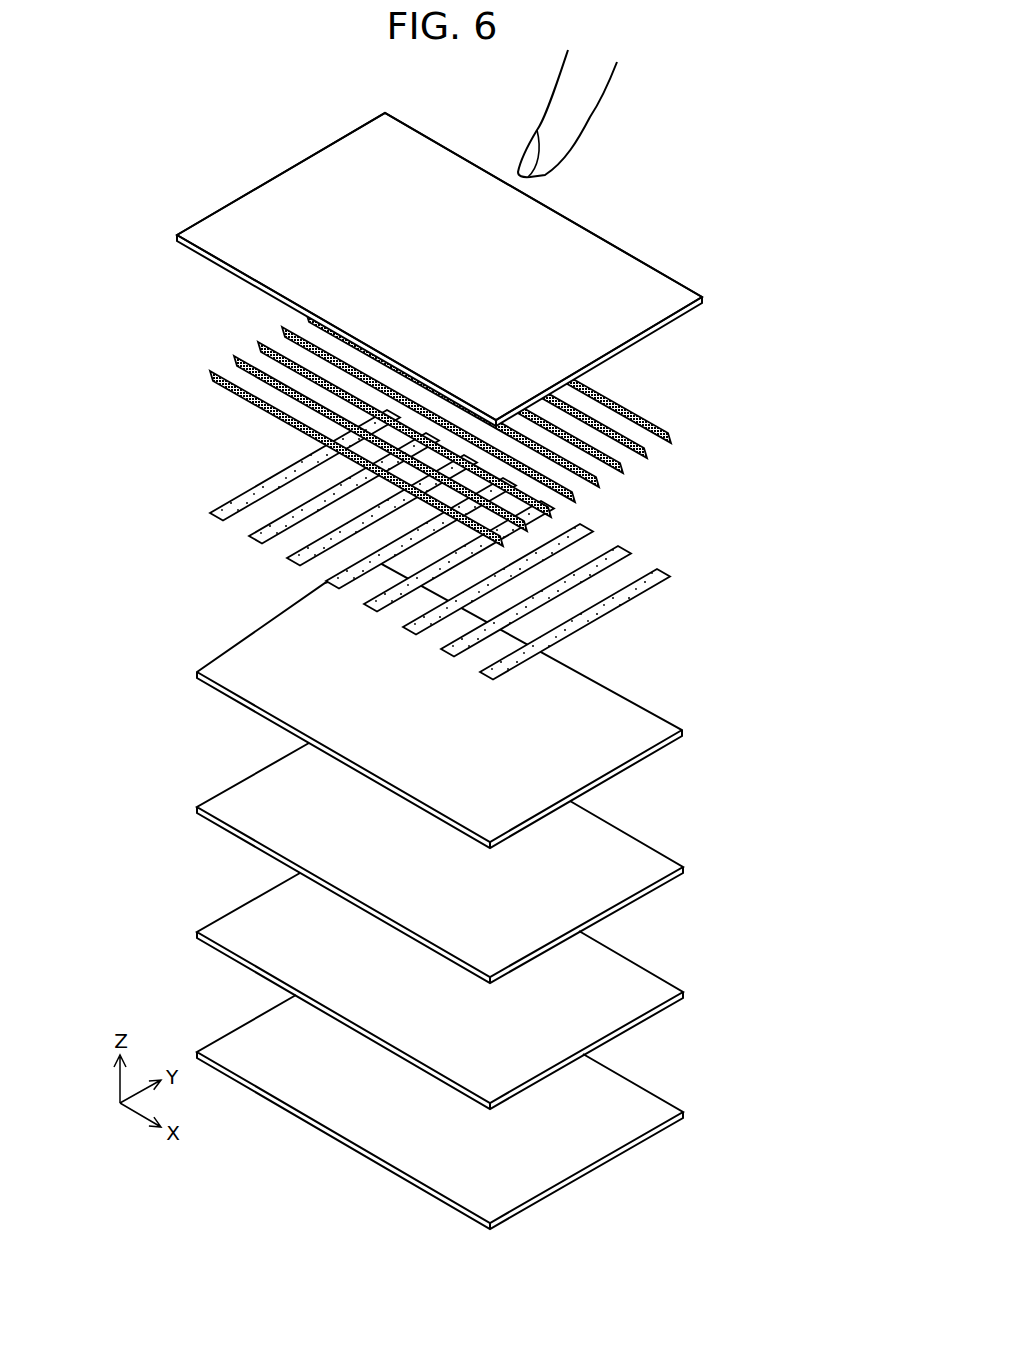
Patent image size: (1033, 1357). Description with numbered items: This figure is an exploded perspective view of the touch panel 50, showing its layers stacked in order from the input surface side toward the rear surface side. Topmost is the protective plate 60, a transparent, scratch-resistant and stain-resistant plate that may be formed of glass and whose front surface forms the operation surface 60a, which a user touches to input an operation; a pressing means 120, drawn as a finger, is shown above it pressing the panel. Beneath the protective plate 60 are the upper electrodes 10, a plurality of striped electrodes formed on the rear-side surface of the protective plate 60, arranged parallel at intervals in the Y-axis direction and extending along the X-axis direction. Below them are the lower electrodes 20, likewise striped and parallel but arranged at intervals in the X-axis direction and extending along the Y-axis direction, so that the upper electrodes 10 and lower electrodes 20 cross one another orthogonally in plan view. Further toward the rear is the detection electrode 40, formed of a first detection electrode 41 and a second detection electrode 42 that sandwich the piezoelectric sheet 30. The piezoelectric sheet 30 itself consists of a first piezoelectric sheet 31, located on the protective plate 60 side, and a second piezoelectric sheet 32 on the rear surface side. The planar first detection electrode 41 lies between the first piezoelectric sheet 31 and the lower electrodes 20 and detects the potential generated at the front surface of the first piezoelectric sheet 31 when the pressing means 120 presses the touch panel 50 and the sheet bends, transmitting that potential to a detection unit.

The upper electrodes 10 is at (657, 425).
The lower electrodes 20 is at (248, 497).
The piezoelectric sheet 30 is at (512, 926).
The first piezoelectric sheet 31 is at (632, 867).
The second piezoelectric sheet 32 is at (645, 992).
The detection electrode 40 is at (370, 896).
The first detection electrode 41 is at (258, 675).
The second detection electrode 42 is at (253, 1042).
The touch panel 50 is at (442, 660).
The protective plate 60 is at (477, 269).
The operation surface 60a is at (637, 278).
The pressing means 120 is at (562, 103).